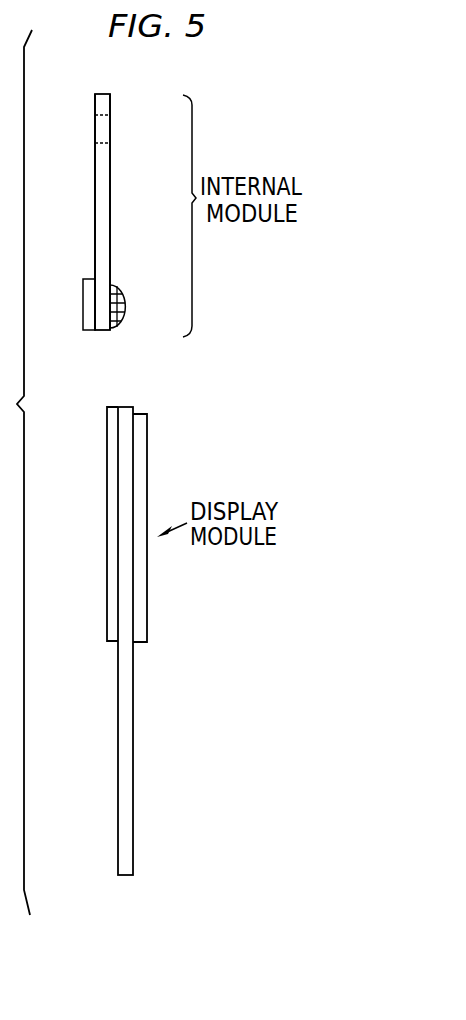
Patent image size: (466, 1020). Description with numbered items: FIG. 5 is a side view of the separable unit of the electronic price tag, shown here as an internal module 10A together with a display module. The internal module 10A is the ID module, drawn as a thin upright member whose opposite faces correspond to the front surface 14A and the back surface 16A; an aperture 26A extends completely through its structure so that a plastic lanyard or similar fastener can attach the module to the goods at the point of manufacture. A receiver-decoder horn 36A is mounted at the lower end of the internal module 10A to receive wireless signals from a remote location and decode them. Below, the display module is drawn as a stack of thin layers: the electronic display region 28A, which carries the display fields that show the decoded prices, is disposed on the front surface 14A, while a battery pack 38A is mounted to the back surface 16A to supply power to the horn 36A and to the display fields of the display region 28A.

The internal module 10A is at (137, 157).
The front surface 14A is at (111, 222).
The back surface 16A is at (95, 188).
The aperture 26A is at (96, 115).
The electronic display region 28A is at (147, 643).
The receiver-decoder horn 36A is at (125, 306).
The battery pack 38A is at (107, 641).